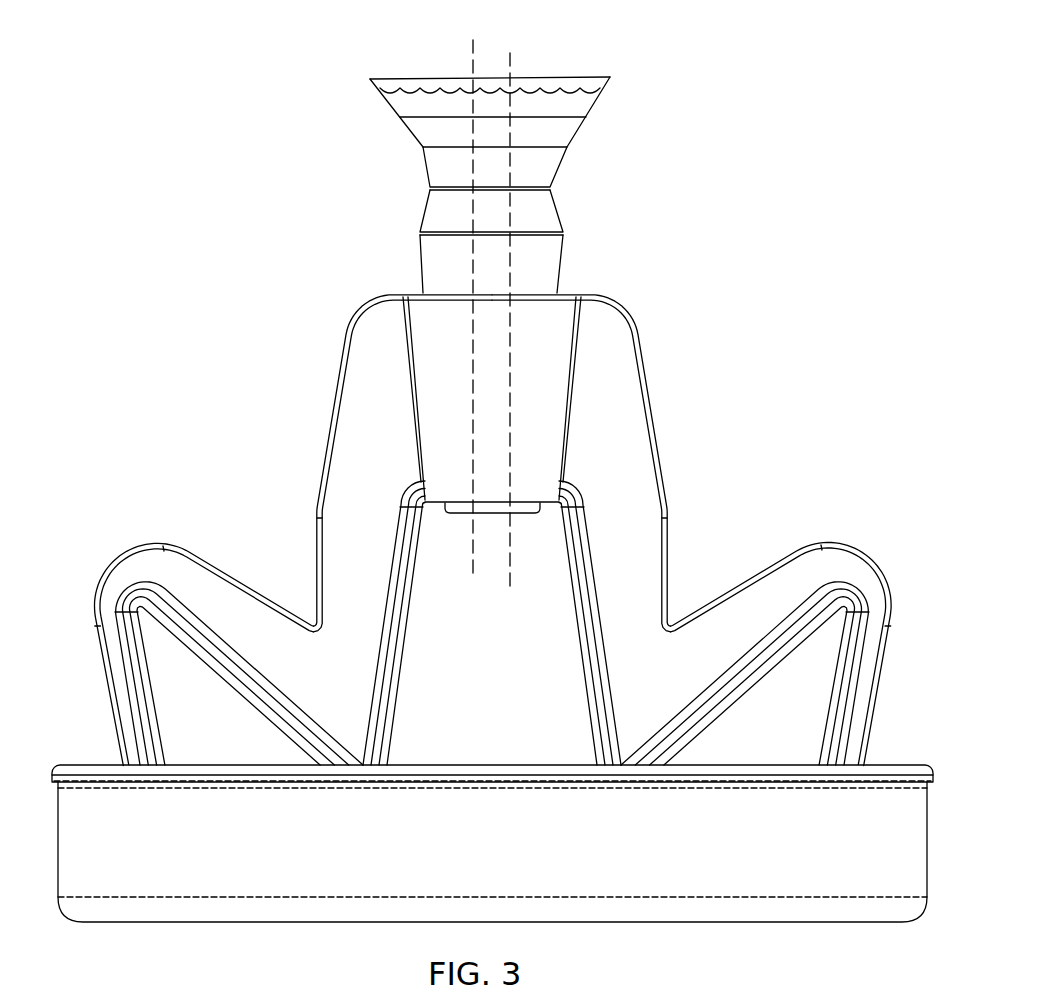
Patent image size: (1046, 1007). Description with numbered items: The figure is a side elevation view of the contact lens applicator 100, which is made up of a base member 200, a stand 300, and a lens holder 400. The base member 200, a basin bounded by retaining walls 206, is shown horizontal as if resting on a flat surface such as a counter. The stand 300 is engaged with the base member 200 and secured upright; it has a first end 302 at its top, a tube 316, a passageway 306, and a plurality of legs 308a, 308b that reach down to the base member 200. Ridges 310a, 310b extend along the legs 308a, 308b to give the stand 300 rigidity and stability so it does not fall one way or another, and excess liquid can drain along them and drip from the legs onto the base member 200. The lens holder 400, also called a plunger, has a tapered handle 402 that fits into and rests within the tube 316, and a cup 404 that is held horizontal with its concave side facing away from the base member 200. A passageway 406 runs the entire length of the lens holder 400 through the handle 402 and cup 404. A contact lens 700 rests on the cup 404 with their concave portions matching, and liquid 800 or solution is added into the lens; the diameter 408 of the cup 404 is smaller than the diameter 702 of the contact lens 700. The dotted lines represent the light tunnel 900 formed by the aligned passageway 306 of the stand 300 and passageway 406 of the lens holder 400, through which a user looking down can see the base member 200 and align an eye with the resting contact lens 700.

The contact lens applicator 100 is at (120, 215).
The base member 200 is at (494, 876).
The retaining walls 206 is at (852, 865).
The stand 300 is at (500, 403).
The first end 302 is at (580, 293).
The passageway 306 is at (515, 410).
The leg 308a is at (633, 453).
The leg 308b is at (357, 390).
The ridge 310a is at (840, 547).
The ridge 310b is at (137, 545).
The tube 316 is at (541, 372).
The lens holder 400 is at (486, 205).
The handle 402 is at (447, 260).
The cup 404 is at (543, 130).
The passageway 406 is at (515, 202).
The diameter of the cup 408 is at (418, 120).
The contact lens 700 is at (493, 91).
The diameter of the contact lens 702 is at (593, 77).
The liquid 800 is at (573, 105).
The light tunnel 900 is at (490, 550).